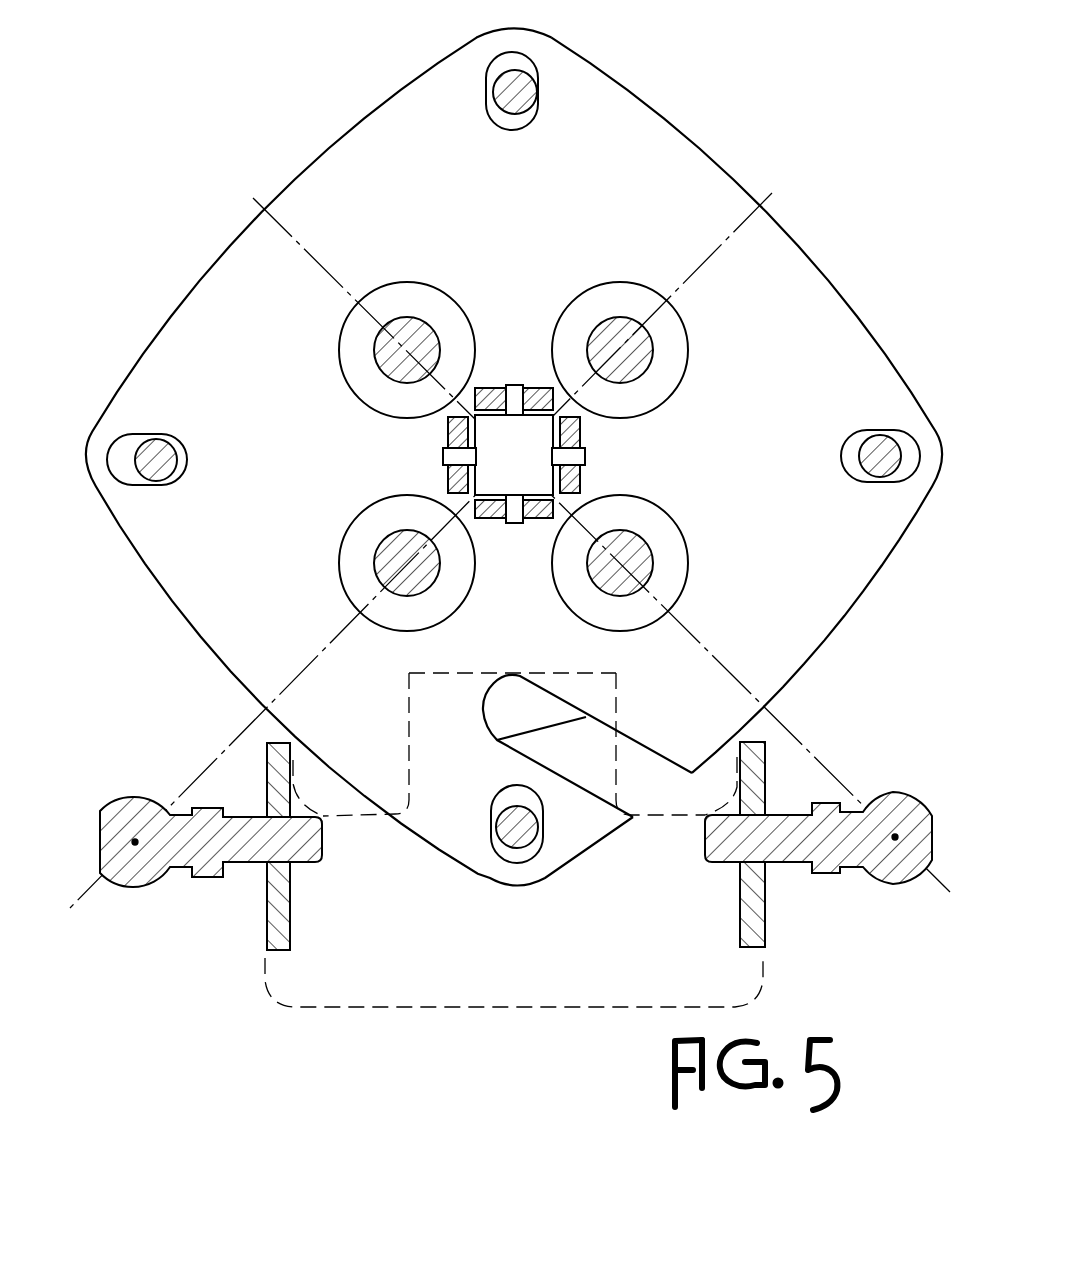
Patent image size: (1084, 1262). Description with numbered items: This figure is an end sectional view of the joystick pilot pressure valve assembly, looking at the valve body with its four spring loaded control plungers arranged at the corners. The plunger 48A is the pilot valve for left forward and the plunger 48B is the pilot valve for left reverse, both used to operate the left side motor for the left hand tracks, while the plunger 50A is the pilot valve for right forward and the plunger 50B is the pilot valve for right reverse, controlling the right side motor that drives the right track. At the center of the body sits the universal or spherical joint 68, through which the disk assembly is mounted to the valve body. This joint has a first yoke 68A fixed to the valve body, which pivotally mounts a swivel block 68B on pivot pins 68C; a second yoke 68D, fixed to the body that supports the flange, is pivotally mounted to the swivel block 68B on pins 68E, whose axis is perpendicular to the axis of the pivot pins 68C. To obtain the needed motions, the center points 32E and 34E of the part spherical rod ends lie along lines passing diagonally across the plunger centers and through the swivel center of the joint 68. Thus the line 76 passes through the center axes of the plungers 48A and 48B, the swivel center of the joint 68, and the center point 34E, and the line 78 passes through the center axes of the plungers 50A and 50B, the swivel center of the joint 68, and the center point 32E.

The line 78 is at (746, 222).
The line 76 is at (732, 670).
The plunger 48A is at (653, 538).
The plunger 48B is at (380, 341).
The plunger 50A is at (383, 547).
The plunger 50B is at (653, 340).
The universal joint 68 is at (502, 453).
The first yoke 68A is at (474, 393).
The swivel block 68B is at (490, 433).
The pivot pins 68C is at (513, 384).
The second yoke 68D is at (447, 430).
The pins 68E is at (443, 457).
The center point 32E is at (135, 842).
The center point 34E is at (895, 837).